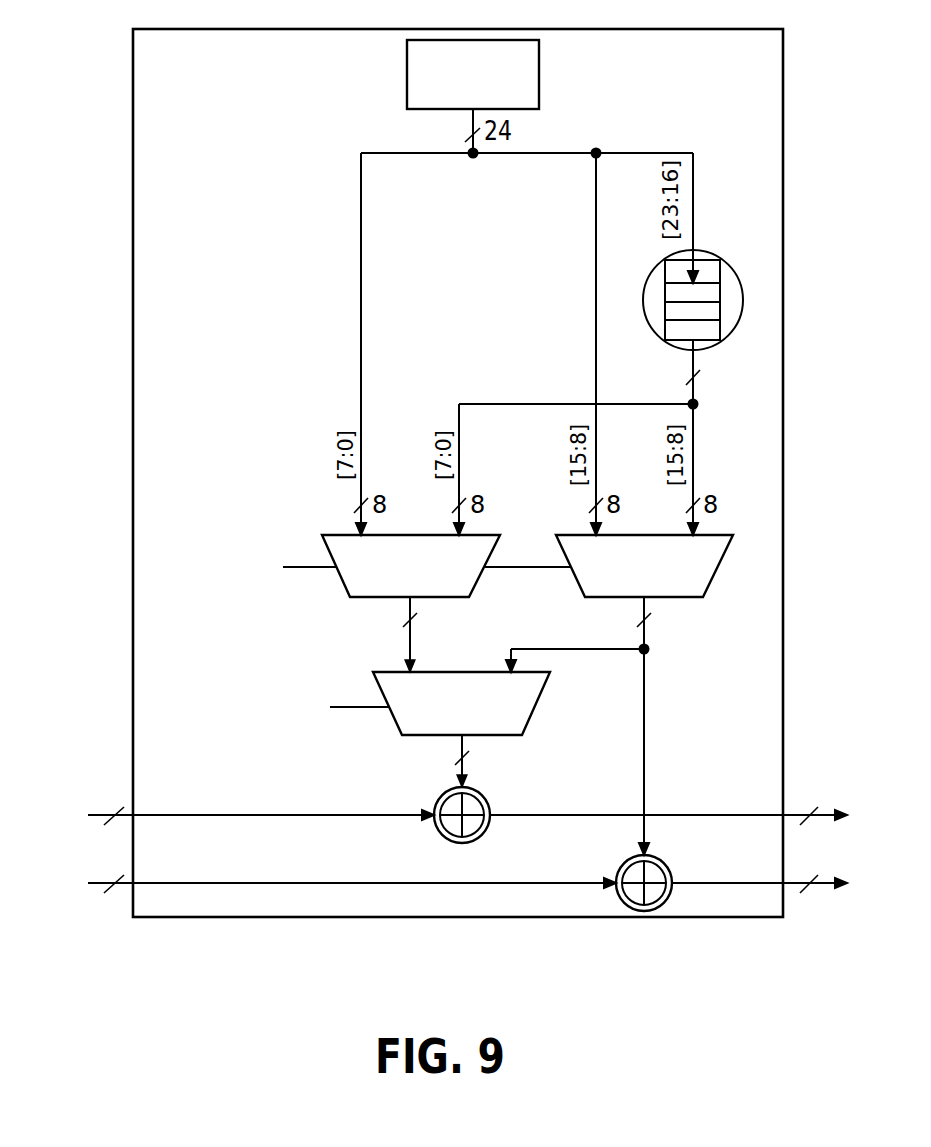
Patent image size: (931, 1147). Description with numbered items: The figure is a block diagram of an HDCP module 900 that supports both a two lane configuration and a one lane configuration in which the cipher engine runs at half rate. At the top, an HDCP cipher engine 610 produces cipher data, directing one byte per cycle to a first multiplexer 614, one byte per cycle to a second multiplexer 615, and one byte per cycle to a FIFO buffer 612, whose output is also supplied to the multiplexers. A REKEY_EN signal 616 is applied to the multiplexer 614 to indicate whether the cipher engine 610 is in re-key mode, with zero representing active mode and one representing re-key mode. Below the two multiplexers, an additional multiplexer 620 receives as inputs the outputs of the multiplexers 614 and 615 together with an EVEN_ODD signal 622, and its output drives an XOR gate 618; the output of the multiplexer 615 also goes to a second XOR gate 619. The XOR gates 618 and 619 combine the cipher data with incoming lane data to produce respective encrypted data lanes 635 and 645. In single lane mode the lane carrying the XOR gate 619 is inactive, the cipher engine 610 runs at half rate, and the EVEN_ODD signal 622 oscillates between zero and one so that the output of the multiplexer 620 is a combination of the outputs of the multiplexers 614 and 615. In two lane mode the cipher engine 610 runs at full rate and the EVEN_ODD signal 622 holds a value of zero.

The HDCP module 900 is at (197, 83).
The HDCP cipher engine 610 is at (540, 74).
The FIFO buffer 612 is at (647, 330).
The multiplexer 614 is at (477, 580).
The multiplexer 615 is at (712, 580).
The REKEY_EN signal 616 is at (212, 548).
The XOR gate 618 is at (440, 797).
The XOR gate 619 is at (622, 865).
The multiplexer 620 is at (530, 720).
The EVEN_ODD signal 622 is at (244, 688).
The encrypted data lane 635 is at (90, 812).
The encrypted data lane 645 is at (90, 880).